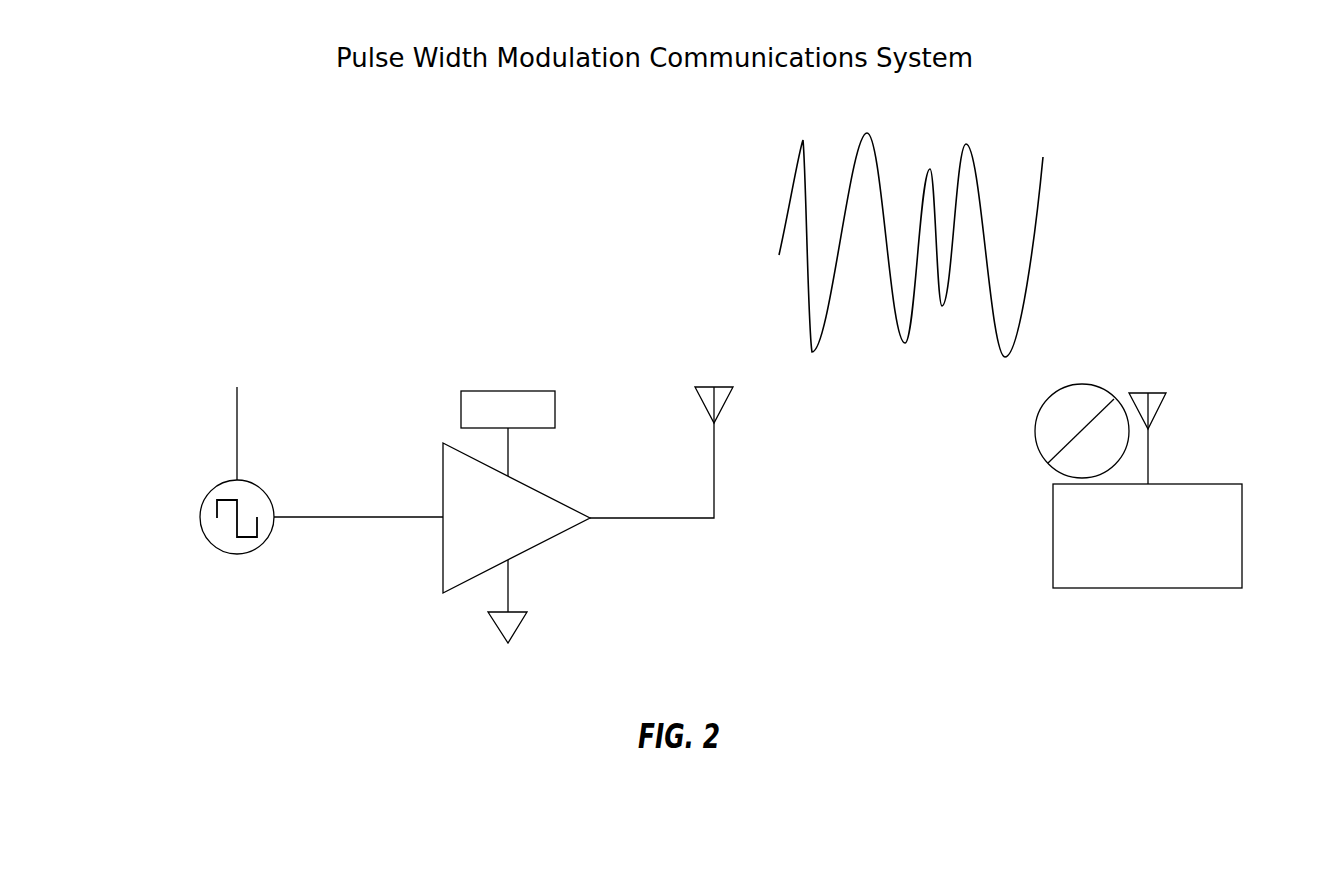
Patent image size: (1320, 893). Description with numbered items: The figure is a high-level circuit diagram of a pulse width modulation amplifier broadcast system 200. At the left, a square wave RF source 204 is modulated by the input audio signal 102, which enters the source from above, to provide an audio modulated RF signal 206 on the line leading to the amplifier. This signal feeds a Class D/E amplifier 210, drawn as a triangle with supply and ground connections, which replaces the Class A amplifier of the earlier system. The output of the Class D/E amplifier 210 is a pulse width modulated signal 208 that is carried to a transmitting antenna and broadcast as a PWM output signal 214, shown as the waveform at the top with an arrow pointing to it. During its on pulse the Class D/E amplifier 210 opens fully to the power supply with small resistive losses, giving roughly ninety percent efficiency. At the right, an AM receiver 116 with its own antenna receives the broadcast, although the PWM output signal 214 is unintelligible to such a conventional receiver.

The pulse width modulation amplifier broadcast system 200 is at (470, 306).
The input audio signal 102 is at (227, 403).
The square wave RF source 204 is at (198, 517).
The audio modulated RF signal 206 is at (338, 517).
The pulse width modulated signal 208 is at (633, 518).
The Class D/E amplifier 210 is at (507, 531).
The PWM output signal 214 is at (937, 347).
The AM receiver 116 is at (1233, 582).